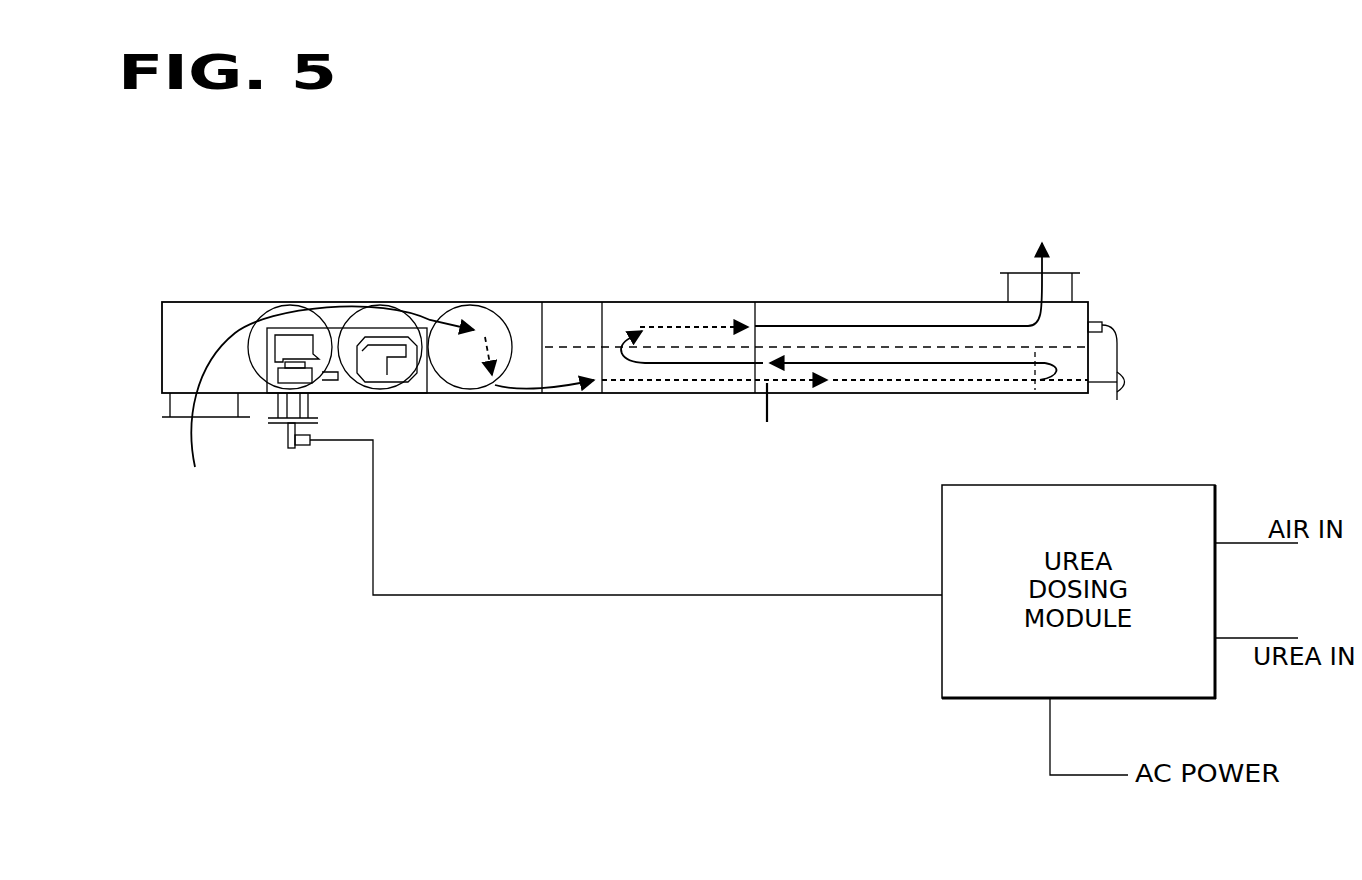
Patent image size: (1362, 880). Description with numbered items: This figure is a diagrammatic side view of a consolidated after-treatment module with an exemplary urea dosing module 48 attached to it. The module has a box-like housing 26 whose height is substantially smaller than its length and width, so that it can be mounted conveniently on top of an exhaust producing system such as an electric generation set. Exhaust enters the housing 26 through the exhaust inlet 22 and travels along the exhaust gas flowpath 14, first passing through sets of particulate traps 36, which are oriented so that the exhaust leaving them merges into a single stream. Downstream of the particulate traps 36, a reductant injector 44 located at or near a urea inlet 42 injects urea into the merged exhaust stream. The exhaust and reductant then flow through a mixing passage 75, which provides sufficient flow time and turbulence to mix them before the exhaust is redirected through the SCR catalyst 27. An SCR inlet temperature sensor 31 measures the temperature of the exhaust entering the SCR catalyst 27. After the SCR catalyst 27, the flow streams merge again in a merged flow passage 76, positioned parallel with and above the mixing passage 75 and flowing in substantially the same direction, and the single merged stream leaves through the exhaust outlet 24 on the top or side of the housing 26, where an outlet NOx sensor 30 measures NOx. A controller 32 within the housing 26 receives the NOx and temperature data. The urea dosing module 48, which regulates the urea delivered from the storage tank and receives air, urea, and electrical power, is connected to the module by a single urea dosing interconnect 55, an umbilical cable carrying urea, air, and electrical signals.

The exhaust gas flowpath 14 is at (216, 335).
The exhaust inlet 22 is at (167, 438).
The exhaust outlet 24 is at (1092, 279).
The housing 26 is at (176, 337).
The SCR catalyst 27 is at (670, 315).
The outlet NOx sensor 30 is at (1097, 315).
The SCR inlet temperature sensor 31 is at (767, 412).
The controller 32 is at (415, 393).
The particulate traps 36 is at (453, 302).
The urea inlet 42 is at (332, 406).
The reductant injector 44 is at (277, 409).
The urea dosing module 48 is at (1102, 485).
The urea dosing interconnect 55 is at (640, 600).
The mixing passage 75 is at (667, 385).
The merged flow passage 76 is at (782, 308).